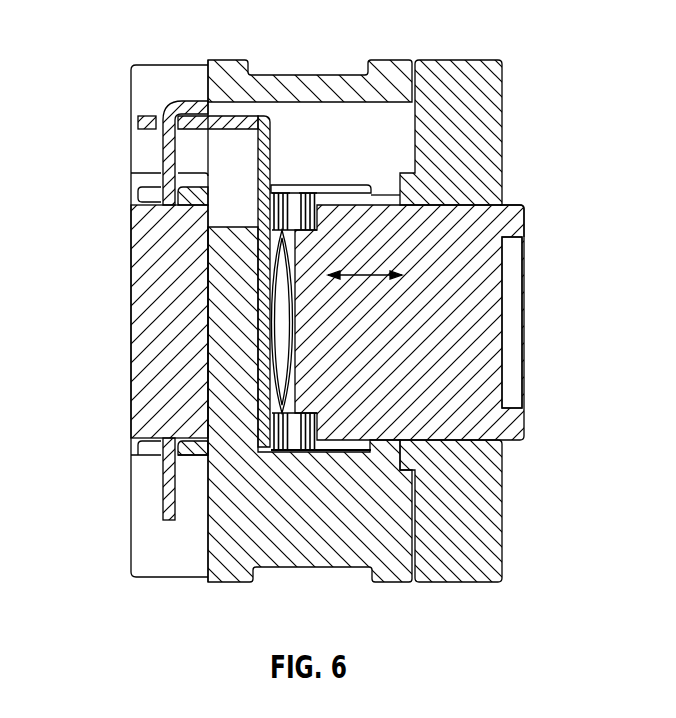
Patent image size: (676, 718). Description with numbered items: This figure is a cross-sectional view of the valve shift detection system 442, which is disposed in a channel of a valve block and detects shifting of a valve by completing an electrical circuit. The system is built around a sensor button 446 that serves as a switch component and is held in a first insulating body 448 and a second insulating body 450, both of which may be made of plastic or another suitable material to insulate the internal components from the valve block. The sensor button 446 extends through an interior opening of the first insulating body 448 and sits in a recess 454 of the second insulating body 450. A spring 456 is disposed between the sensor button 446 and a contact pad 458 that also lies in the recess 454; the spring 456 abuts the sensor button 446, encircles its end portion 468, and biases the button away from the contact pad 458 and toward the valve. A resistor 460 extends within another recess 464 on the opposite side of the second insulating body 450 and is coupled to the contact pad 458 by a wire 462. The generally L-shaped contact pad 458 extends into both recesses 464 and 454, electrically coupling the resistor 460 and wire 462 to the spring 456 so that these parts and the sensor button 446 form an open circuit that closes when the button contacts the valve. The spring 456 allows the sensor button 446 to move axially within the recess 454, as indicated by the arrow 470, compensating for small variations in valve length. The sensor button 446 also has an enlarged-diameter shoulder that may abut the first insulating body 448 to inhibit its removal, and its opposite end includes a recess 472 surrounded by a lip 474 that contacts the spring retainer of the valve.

The valve shift detection system 442 is at (124, 42).
The sensor button 446 is at (433, 305).
The first insulating body 448 is at (470, 74).
The second insulating body 450 is at (392, 78).
The recess 454 is at (343, 191).
The spring 456 is at (283, 190).
The contact pad 458 is at (280, 108).
The resistor 460 is at (150, 322).
The wire 462 is at (170, 155).
The recess 464 is at (124, 440).
The end portion 468 is at (313, 452).
The arrow 470 is at (394, 275).
The recess 472 is at (514, 303).
The lip 474 is at (528, 222).